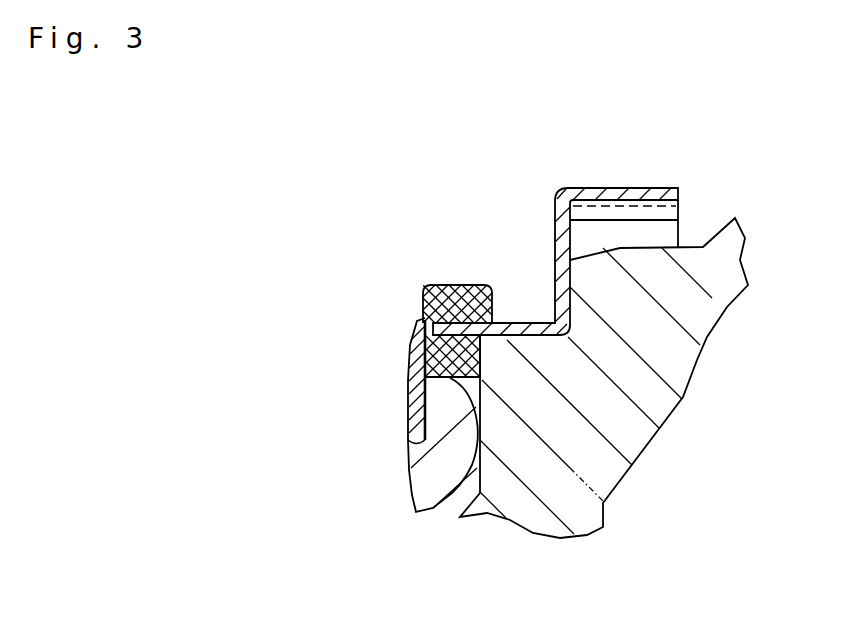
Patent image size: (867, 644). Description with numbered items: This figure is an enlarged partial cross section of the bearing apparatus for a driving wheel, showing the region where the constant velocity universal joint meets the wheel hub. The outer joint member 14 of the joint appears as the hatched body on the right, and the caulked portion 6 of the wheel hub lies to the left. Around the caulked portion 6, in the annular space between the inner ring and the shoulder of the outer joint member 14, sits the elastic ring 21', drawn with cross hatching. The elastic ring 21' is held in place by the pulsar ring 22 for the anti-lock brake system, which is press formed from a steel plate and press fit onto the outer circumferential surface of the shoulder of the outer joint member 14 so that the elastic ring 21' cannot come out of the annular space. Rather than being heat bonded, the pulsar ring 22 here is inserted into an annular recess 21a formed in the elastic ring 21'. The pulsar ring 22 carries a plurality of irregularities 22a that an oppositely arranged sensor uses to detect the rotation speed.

The pulsar ring 22 is at (595, 182).
The irregularities 22a is at (659, 211).
The outer joint member 14 is at (684, 373).
The elastic ring 21' is at (445, 301).
The annular recess 21a is at (489, 352).
The caulked portion 6 is at (443, 470).